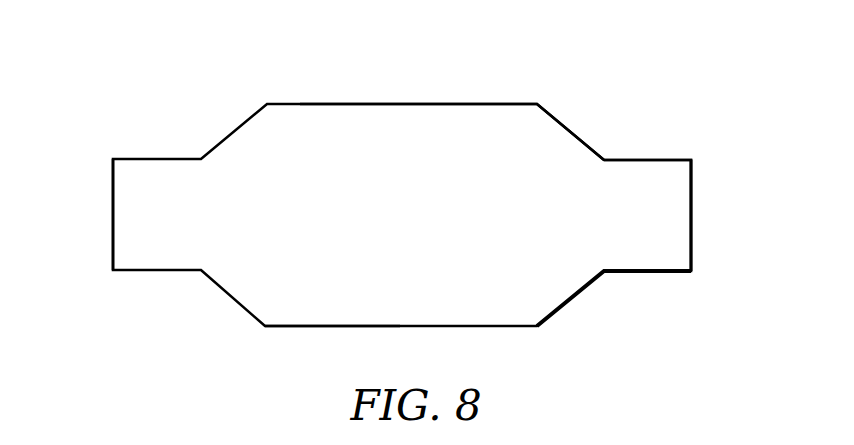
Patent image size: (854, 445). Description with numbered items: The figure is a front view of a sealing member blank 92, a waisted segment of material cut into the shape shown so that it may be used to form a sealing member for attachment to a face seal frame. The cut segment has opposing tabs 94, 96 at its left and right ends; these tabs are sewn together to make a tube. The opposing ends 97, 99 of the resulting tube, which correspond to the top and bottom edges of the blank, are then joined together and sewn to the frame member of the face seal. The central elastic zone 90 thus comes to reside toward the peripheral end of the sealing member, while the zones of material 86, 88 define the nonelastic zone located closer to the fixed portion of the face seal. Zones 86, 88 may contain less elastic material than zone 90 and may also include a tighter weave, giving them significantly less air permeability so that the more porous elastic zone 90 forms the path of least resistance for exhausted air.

The sealing member blank 92 is at (387, 224).
The opposing end of the tube 99 is at (500, 327).
The opposing end of the tube 97 is at (392, 105).
The zone of material 86 is at (510, 125).
The elastic zone 90 is at (598, 210).
The tab 94 is at (138, 212).
The tab 96 is at (675, 217).
The zone of material 88 is at (290, 310).